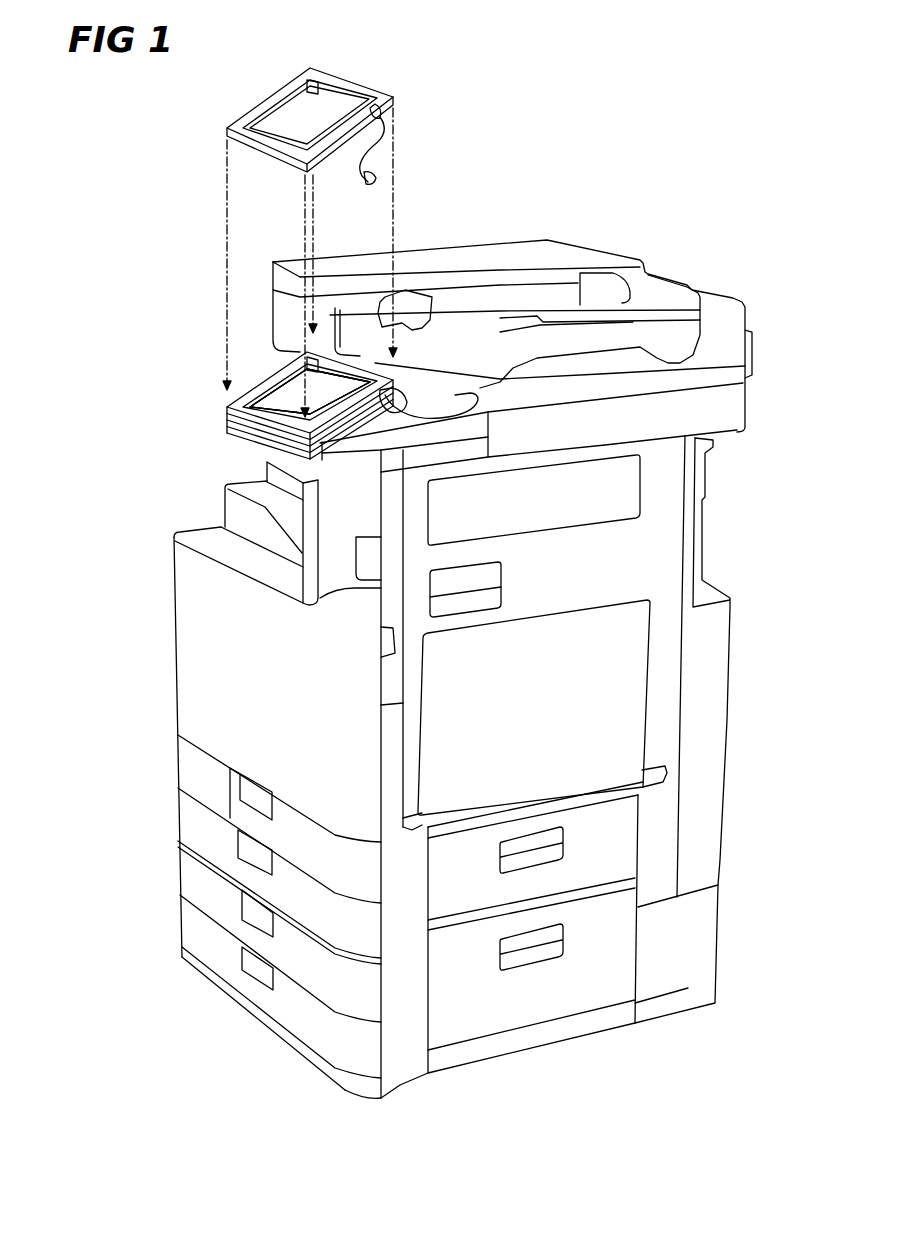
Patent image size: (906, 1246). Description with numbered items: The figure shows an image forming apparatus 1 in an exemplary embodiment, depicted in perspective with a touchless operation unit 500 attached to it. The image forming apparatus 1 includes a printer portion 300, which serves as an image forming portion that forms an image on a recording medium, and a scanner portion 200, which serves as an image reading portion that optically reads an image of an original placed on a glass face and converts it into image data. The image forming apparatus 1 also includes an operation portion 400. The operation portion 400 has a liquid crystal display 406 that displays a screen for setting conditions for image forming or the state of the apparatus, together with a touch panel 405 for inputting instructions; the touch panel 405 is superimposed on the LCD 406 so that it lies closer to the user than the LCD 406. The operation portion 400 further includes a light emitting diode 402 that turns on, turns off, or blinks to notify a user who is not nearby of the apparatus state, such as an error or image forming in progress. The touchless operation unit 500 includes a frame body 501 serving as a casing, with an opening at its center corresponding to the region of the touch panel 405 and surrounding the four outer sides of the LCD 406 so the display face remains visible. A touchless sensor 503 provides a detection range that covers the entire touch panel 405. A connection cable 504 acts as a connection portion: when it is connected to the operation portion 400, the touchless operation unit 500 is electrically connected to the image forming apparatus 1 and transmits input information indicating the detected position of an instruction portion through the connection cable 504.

The image forming apparatus 1 is at (552, 202).
The scanner portion 200 is at (720, 310).
The printer portion 300 is at (203, 637).
The operation portion 400 is at (227, 420).
The light emitting diode (LED) 402 is at (257, 446).
The touch panel 405 is at (289, 398).
The liquid crystal display (LCD) 406 is at (310, 391).
The touchless operation unit 500 is at (283, 81).
The frame body 501 is at (262, 107).
The touchless sensor 503 is at (307, 68).
The connection cable 504 is at (377, 150).